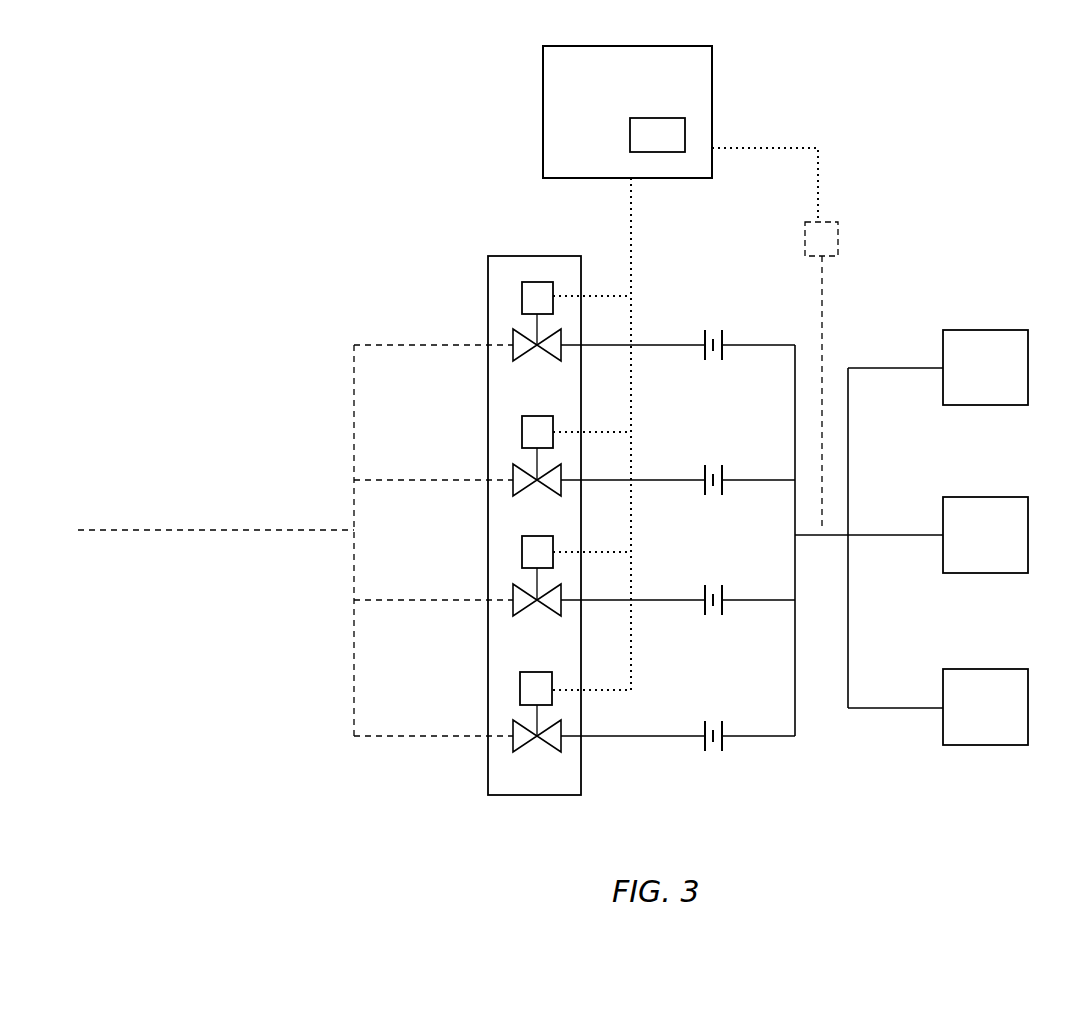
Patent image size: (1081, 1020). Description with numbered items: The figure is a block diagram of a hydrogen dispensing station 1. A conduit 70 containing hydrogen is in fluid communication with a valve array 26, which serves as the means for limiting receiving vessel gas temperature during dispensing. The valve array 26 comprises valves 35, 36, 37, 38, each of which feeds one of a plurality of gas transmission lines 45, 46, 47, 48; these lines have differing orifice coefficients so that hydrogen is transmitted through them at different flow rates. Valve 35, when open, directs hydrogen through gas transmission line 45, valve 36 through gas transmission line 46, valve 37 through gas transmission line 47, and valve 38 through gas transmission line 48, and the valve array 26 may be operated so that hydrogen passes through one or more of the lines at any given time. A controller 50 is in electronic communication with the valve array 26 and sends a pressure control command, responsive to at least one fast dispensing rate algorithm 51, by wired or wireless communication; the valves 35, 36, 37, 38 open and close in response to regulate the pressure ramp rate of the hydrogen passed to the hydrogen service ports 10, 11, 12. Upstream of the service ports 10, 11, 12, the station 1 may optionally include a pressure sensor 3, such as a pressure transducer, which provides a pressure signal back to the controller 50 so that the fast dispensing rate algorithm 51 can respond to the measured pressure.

The hydrogen dispensing station 1 is at (968, 100).
The pressure sensor 3 is at (821, 376).
The hydrogen service port 10 is at (985, 367).
The hydrogen service port 11 is at (985, 535).
The hydrogen service port 12 is at (985, 707).
The valve array 26 is at (500, 255).
The valve 35 is at (552, 362).
The valve 36 is at (554, 496).
The valve 37 is at (552, 616).
The valve 38 is at (553, 752).
The gas transmission line 45 is at (657, 345).
The gas transmission line 46 is at (657, 480).
The gas transmission line 47 is at (660, 600).
The gas transmission line 48 is at (665, 736).
The controller 50 is at (627, 112).
The fast dispensing rate algorithm 51 is at (657, 135).
The conduit 70 is at (170, 530).